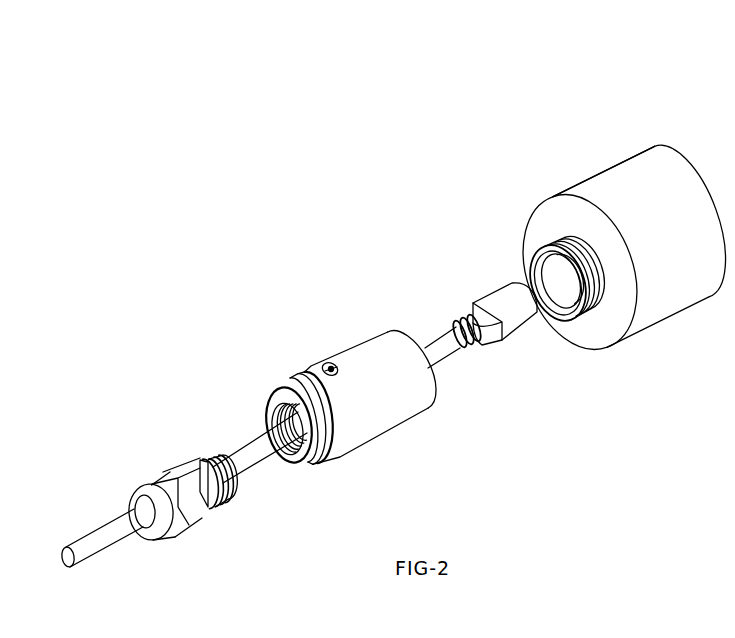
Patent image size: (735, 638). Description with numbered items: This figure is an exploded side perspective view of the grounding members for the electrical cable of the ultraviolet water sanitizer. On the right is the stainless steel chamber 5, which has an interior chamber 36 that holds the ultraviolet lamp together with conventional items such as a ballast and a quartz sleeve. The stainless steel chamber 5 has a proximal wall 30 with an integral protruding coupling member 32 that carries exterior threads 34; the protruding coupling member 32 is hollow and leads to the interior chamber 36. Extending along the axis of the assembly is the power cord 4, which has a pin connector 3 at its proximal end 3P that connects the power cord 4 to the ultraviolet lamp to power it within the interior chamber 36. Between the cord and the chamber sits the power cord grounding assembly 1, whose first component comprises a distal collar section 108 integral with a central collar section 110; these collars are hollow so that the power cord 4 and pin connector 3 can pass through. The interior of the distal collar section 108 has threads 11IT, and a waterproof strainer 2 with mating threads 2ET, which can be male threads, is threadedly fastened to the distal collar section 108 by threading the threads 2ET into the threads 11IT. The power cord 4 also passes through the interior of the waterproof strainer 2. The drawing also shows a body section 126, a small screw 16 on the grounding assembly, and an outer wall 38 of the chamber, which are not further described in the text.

The power cord grounding assembly 1 is at (333, 333).
The waterproof strainer 2 is at (155, 475).
The mating threads 2ET is at (220, 503).
The pin connector 3 is at (498, 297).
The proximal end 3P is at (464, 345).
The power cord 4 is at (248, 447).
The stainless steel chamber 5 is at (578, 167).
The set screw 16 is at (323, 367).
The proximal wall 30 is at (543, 213).
The protruding coupling member 32 is at (532, 247).
The exterior threads 34 is at (595, 310).
The interior chamber 36 is at (570, 275).
The housing wall 38 is at (623, 152).
The distal collar section 108 is at (282, 397).
The threads 11IT is at (297, 467).
The central collar section 110 is at (343, 455).
The cylindrical body 126 is at (373, 343).